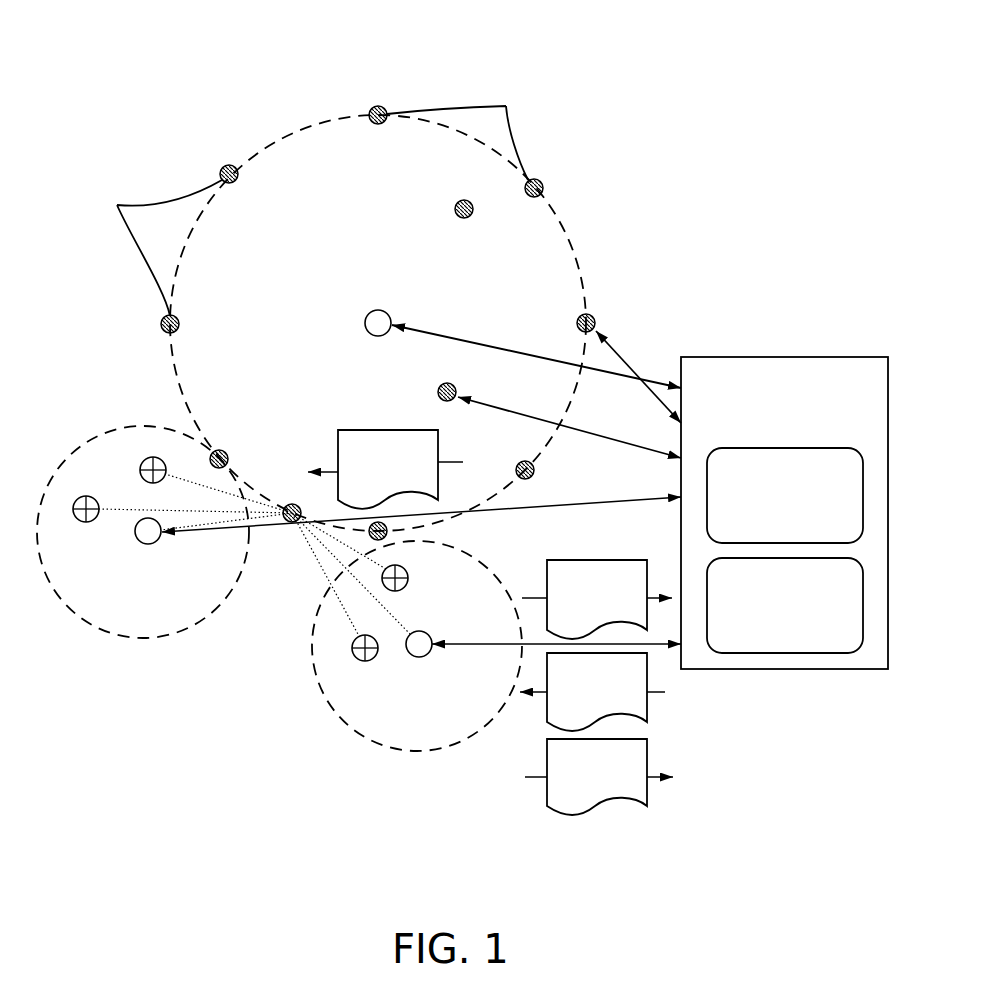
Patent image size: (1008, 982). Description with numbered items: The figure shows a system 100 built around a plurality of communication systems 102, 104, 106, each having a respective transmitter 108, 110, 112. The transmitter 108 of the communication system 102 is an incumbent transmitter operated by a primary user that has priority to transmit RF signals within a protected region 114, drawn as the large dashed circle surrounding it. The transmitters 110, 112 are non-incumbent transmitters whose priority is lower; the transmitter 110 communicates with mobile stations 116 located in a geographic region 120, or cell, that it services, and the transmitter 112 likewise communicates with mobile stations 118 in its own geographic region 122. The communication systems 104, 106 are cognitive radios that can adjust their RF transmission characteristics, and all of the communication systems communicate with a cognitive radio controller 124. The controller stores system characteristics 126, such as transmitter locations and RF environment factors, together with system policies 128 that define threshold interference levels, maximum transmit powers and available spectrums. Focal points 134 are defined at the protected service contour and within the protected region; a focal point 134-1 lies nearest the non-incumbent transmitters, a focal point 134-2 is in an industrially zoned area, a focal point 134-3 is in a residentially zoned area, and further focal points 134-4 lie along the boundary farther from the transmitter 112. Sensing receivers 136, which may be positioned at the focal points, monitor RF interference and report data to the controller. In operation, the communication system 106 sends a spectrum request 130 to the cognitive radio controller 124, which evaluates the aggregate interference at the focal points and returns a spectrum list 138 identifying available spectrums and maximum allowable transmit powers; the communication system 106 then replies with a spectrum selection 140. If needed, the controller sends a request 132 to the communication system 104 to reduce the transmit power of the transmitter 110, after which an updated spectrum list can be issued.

The system 100 is at (457, 40).
The communication system 102 is at (350, 323).
The communication system 104 is at (150, 547).
The communication system 106 is at (421, 660).
The transmitter 108 is at (381, 316).
The transmitter 110 is at (140, 541).
The transmitter 112 is at (414, 654).
The protected region 114 is at (563, 223).
The mobile stations 116 is at (88, 495).
The mobile stations 118 is at (352, 648).
The geographic region 120 is at (70, 457).
The geographic region 122 is at (313, 680).
The cognitive radio controller 124 is at (784, 513).
The system characteristics 126 is at (785, 495).
The system policies 128 is at (785, 605).
The spectrum request 130 is at (597, 599).
The request 132 is at (385, 469).
The focal points 134 is at (219, 449).
The focal point 134-1 is at (292, 504).
The focal point 134-2 is at (464, 219).
The focal point 134-3 is at (438, 395).
The focal points 134-4 is at (308, 200).
The sensing receivers 136 is at (291, 504).
The spectrum list 138 is at (592, 692).
The spectrum selection 140 is at (599, 777).